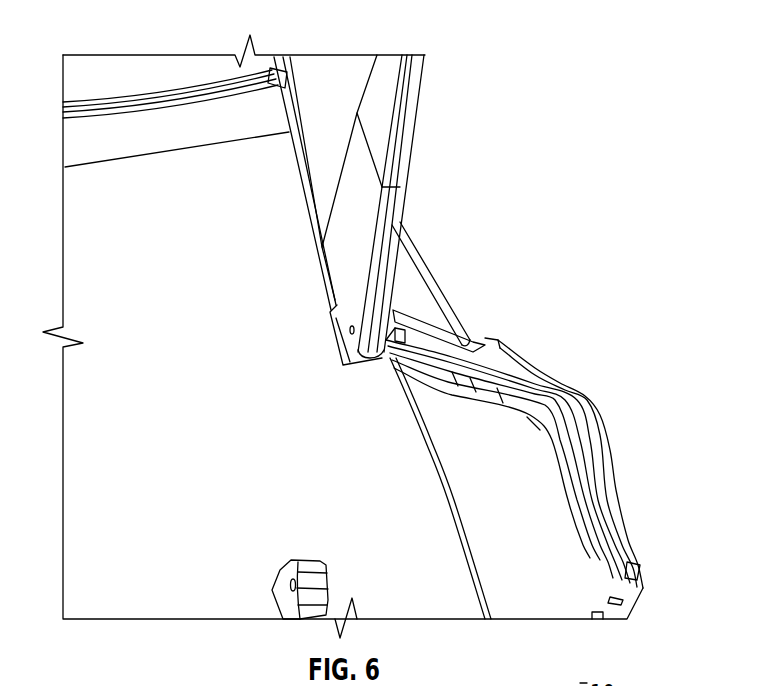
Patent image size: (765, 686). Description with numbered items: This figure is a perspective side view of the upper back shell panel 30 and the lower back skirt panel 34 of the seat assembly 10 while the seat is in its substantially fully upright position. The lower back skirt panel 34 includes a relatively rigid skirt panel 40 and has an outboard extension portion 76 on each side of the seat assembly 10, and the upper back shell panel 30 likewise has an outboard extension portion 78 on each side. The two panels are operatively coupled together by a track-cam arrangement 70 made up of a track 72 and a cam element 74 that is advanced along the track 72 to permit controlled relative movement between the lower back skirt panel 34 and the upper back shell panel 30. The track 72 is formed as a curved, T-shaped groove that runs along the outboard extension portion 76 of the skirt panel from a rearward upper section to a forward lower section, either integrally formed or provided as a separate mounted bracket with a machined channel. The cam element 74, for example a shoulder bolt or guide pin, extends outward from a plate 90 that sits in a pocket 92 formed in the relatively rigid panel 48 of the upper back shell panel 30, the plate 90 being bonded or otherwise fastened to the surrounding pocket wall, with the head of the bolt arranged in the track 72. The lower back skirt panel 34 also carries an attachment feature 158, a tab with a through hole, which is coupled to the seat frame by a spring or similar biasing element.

The seat assembly 10 is at (553, 52).
The upper back shell panel 30 is at (385, 105).
The relatively rigid panel 48 is at (398, 110).
The outboard extension portion 78 is at (385, 153).
The plate 90 is at (369, 204).
The pocket 92 is at (395, 252).
The track-cam arrangement 70 is at (403, 300).
The cam element 74 is at (405, 335).
The track 72 is at (463, 365).
The lower back skirt panel 34 is at (614, 482).
The relatively rigid skirt panel 40 is at (558, 548).
The outboard extension portion 76 is at (523, 512).
The attachment feature 158 is at (310, 562).